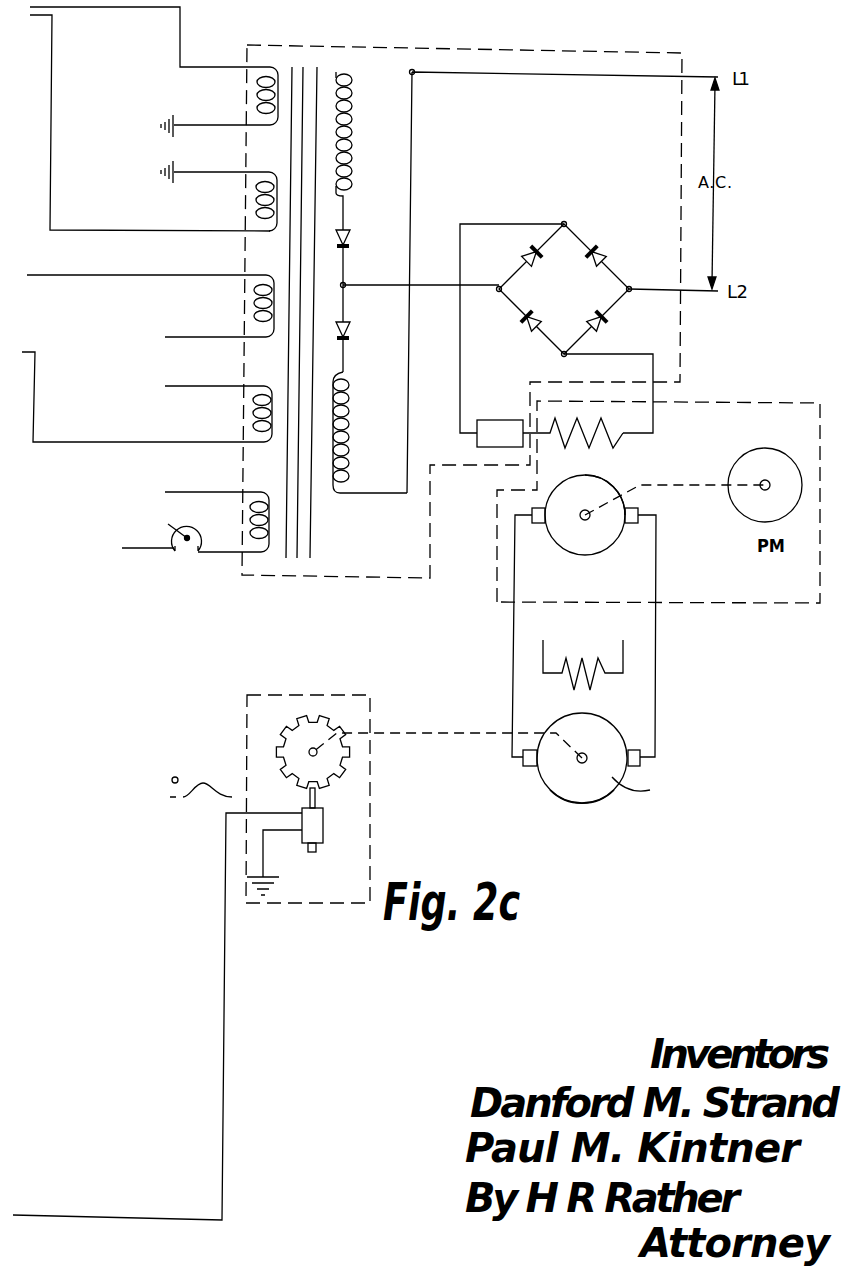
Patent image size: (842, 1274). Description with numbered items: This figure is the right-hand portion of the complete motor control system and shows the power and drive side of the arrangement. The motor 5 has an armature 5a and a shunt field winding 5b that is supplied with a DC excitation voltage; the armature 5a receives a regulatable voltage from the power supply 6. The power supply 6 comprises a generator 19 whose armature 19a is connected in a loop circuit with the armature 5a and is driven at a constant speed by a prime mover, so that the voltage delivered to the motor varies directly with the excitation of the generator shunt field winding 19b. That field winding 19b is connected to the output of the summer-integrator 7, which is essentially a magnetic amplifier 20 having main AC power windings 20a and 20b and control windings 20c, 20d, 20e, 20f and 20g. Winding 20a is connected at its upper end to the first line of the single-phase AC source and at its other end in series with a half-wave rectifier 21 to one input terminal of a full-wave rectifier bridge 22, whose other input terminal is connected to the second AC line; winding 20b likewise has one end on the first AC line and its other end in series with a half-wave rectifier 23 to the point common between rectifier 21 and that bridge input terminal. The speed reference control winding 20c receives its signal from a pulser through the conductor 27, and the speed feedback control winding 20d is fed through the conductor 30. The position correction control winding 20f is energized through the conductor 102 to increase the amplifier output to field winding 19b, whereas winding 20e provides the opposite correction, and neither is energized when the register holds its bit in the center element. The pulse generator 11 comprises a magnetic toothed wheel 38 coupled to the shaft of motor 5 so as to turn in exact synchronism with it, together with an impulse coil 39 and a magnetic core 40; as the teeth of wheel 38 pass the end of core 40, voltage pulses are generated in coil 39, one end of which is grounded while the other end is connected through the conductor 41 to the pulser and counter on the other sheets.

The motor 5 is at (520, 800).
The armature 5a is at (585, 803).
The shunt field winding 5b is at (586, 658).
The power supply 6 is at (740, 606).
The summer-integrator 7 is at (680, 347).
The generator 11 is at (370, 792).
The generator 19 is at (540, 567).
The armature 19a is at (612, 548).
The shunt field winding 19b is at (622, 440).
The magnetic amplifier 20 is at (316, 62).
The main AC power winding 20a is at (352, 140).
The main AC power winding 20b is at (349, 437).
The speed reference control winding 20c is at (250, 104).
The speed feedback control winding 20d is at (252, 210).
The position correction control winding 20e is at (248, 313).
The position correction control winding 20f is at (247, 424).
The control winding 20g is at (250, 511).
The half-wave rectifier 21 is at (352, 239).
The full-wave rectifier bridge 22 is at (577, 302).
The half-wave rectifier 23 is at (352, 330).
The conductor 27 is at (126, 8).
The conductor 30 is at (50, 148).
The magnetic toothed wheel 38 is at (297, 733).
The impulse coil 39 is at (318, 826).
The magnetic core 40 is at (310, 797).
The conductor 41 is at (222, 1105).
The conductor 102 is at (34, 375).